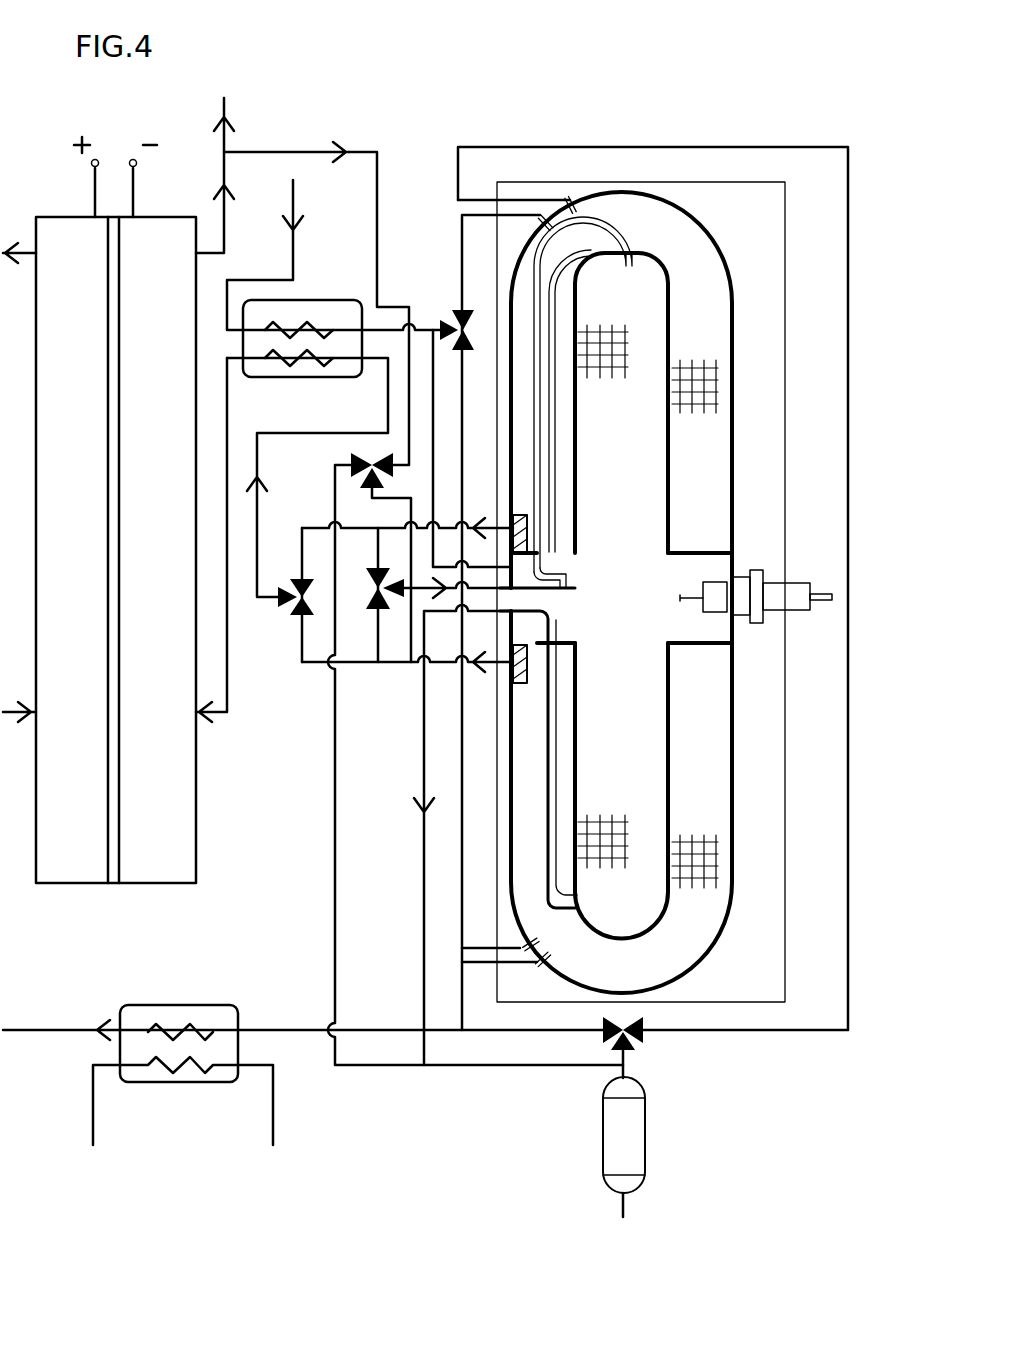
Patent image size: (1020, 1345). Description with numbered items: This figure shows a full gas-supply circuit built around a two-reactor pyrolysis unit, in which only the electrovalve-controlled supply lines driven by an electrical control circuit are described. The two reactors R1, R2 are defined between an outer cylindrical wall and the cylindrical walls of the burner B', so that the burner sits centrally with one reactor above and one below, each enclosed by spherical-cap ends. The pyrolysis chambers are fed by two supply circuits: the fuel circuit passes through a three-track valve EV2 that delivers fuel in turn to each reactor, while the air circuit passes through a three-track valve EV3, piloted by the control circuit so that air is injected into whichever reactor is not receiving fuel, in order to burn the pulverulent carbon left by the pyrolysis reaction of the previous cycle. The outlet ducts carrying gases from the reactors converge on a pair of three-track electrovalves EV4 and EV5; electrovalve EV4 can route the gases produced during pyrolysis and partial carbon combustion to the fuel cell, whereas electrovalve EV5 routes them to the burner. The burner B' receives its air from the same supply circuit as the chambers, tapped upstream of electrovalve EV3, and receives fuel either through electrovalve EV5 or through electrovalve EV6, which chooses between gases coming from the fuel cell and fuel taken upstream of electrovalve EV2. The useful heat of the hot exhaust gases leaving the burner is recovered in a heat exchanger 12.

The heat exchanger 12 is at (184, 1082).
The 3 track valve EV2 is at (634, 1038).
The 3 track valve EV3 is at (458, 313).
The 3 track electrovalve EV4 is at (286, 606).
The 3 track electrovalve EV5 is at (380, 592).
The electrovalve EV6 is at (356, 458).
The burner B' is at (621, 596).
The reactor R1 is at (716, 480).
The reactor R2 is at (716, 767).